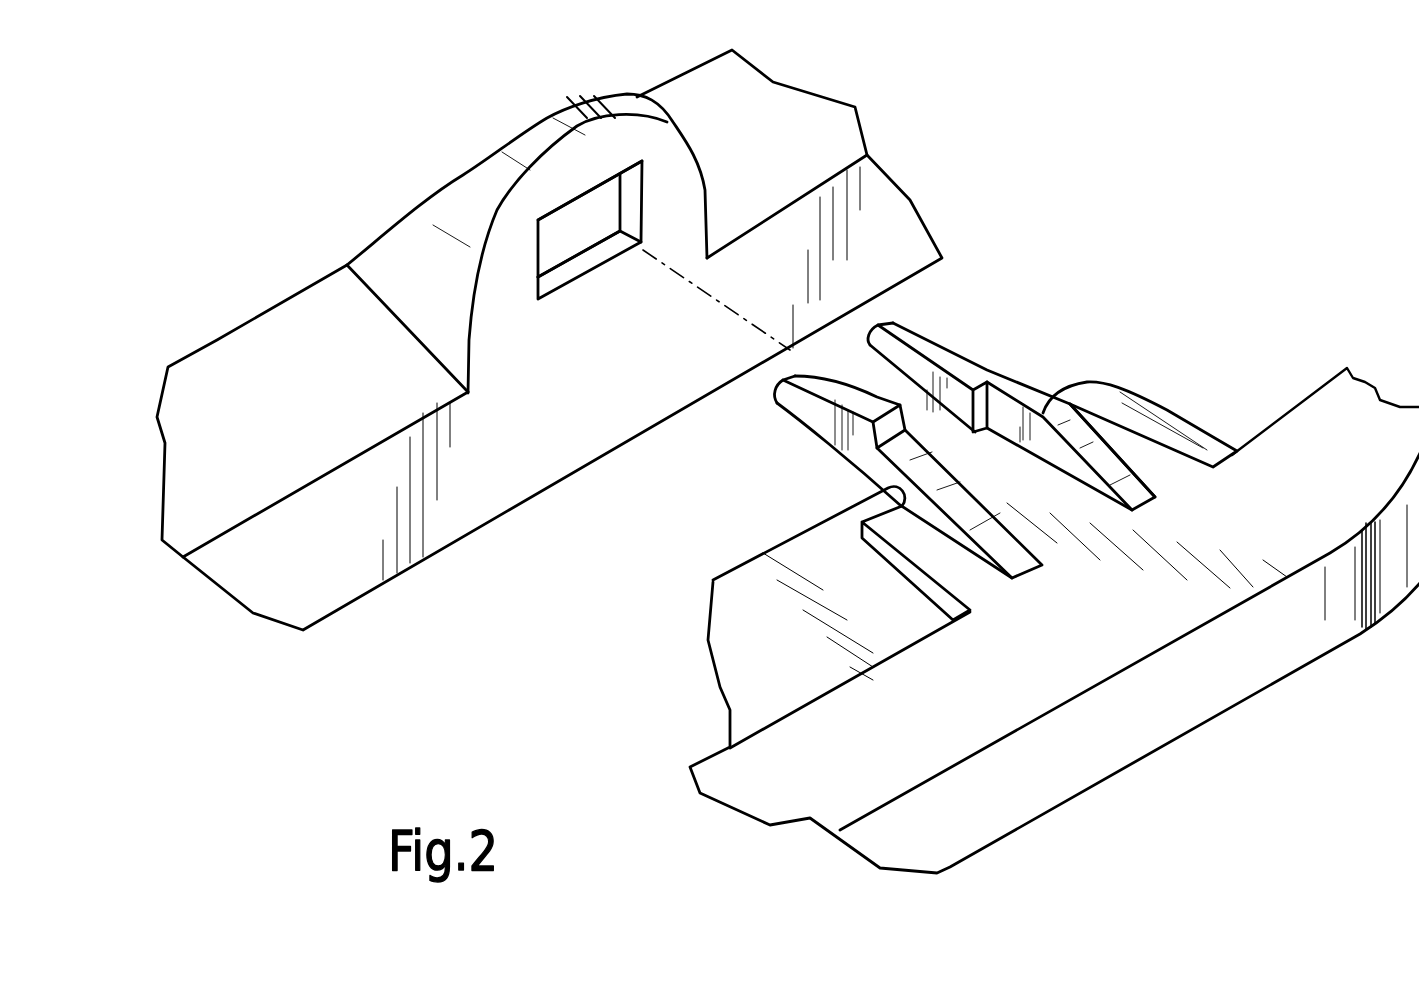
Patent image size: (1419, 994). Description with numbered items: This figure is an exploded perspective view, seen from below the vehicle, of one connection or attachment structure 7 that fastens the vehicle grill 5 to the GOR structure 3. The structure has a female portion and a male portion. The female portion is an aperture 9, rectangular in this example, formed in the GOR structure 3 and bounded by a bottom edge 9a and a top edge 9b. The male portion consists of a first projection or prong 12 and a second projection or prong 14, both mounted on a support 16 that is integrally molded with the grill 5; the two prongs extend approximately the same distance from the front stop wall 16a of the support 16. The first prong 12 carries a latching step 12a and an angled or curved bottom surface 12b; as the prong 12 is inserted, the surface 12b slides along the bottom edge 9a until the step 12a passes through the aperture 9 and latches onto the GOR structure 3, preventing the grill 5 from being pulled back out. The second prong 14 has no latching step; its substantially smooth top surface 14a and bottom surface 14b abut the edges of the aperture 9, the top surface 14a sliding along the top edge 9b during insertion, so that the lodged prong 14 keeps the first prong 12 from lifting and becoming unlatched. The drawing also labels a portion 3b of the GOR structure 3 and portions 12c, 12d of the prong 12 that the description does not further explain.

The GOR structure 3 is at (893, 217).
The arched hood of first body 3b is at (653, 180).
The vehicle grill 5 is at (1175, 707).
The connection or attachment structure 7 is at (1023, 287).
The aperture 9 is at (509, 199).
The bottom edge of aperture 9a is at (566, 210).
The top edge of aperture 9b is at (563, 277).
The first projection or prong 12 is at (856, 477).
The latching step 12a is at (850, 445).
The angled or curved bottom surface 12b is at (775, 403).
The side edge of first tongue head 12c is at (813, 440).
The lower edge of first tongue 12d is at (887, 452).
The second projection or prong 14 is at (1006, 392).
The top surface of second prong 14a is at (880, 367).
The bottom surface of second prong 14b is at (950, 357).
The support 16 is at (975, 475).
The front stop wall 16a is at (863, 523).